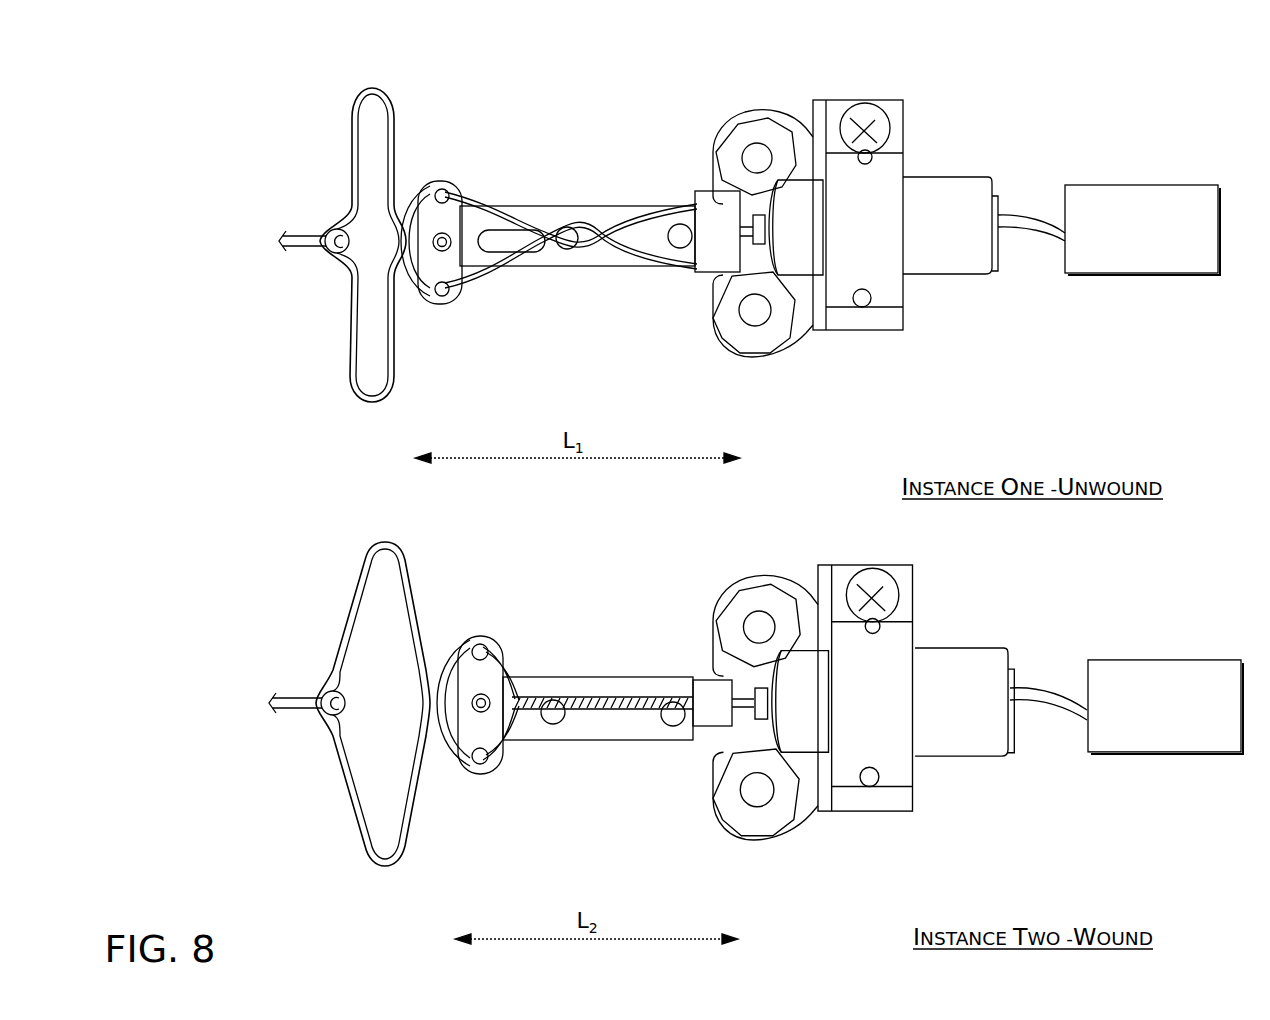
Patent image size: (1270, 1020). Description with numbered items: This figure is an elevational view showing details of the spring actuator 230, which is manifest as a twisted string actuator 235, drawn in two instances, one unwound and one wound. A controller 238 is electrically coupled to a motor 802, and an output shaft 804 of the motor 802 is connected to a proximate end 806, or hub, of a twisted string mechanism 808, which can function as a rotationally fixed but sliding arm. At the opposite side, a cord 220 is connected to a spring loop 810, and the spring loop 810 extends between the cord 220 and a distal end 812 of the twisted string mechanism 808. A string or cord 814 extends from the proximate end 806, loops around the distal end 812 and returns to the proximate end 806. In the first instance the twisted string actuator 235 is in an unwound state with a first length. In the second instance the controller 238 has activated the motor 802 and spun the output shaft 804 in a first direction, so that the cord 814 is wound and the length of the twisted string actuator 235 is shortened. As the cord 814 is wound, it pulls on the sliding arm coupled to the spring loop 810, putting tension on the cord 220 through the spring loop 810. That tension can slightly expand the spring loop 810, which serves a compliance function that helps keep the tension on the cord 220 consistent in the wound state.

The spring actuator 230 is at (178, 635).
The spring loop 810 is at (373, 549).
The cord 220 is at (272, 703).
The twisted string actuator 235 is at (617, 677).
The twisted string mechanism 808 is at (578, 267).
The distal end 812 is at (450, 308).
The cord 814 is at (500, 655).
The proximate end 806 is at (704, 277).
The output shaft 804 is at (752, 692).
The motor 802 is at (926, 258).
The controller 238 is at (1163, 258).